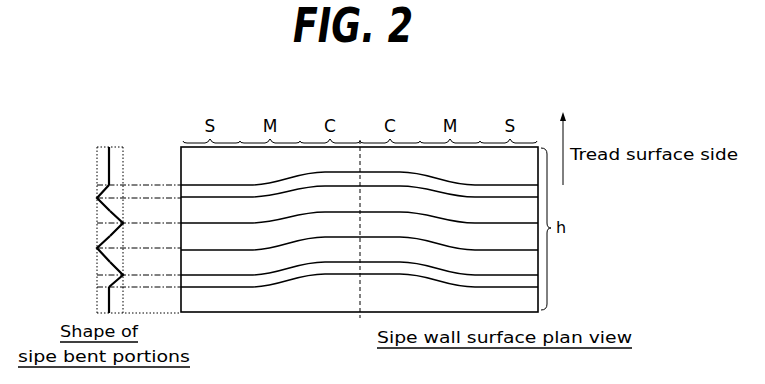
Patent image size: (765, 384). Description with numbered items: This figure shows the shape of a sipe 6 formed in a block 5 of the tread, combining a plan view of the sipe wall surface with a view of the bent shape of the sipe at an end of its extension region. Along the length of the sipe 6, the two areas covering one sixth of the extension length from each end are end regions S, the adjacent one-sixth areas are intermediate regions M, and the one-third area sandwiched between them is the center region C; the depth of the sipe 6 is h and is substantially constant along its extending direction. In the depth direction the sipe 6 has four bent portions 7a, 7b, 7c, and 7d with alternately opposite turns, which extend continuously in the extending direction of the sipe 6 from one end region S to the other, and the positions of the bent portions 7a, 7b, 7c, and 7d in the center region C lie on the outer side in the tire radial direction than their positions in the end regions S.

The block 5 is at (468, 158).
The sipe 6 is at (590, 281).
The bent portion 7a is at (95, 184).
The bent portion 7b is at (124, 207).
The bent portion 7c is at (95, 237).
The bent portion 7d is at (124, 287).